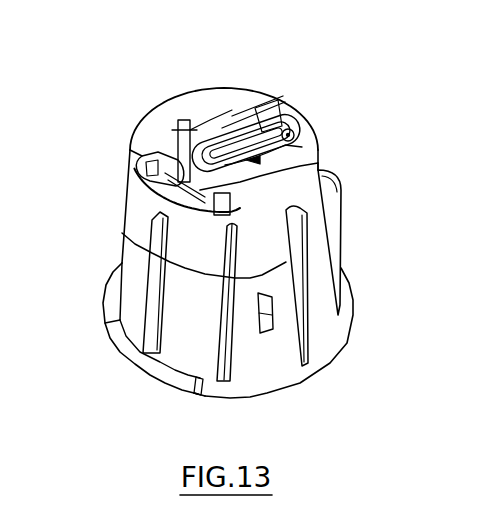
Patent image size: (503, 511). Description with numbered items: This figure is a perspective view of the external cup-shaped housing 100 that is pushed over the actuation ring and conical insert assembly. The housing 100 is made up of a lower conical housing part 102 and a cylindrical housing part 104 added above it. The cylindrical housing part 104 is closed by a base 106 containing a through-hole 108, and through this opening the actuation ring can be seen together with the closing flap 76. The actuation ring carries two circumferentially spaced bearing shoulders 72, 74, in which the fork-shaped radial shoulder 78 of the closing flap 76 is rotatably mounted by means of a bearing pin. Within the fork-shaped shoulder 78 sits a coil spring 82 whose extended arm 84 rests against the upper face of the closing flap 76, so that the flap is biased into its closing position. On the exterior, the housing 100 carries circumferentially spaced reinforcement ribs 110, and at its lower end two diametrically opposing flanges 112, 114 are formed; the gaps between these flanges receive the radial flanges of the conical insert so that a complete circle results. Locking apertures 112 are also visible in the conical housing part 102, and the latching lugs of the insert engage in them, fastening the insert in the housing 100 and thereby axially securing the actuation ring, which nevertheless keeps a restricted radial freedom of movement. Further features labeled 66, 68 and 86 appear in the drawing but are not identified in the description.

The cap 66 is at (157, 153).
The frame 68 is at (320, 163).
The bearing shoulder 72 is at (245, 102).
The bearing shoulder 74 is at (308, 117).
The closing flap 76 is at (305, 150).
The fork-shaped radial shoulder 78 is at (255, 112).
The coil spring 82 is at (275, 108).
The extended arm 84 is at (198, 122).
The lock member 86 is at (139, 180).
The cup-shaped housing 100 is at (355, 267).
The lower conical housing part 102 is at (323, 317).
The cylindrical housing part 104 is at (152, 200).
The base 106 is at (210, 100).
The through-hole 108 is at (182, 132).
The reinforcement ribs 110 is at (204, 401).
The flange / locking apertures 112 is at (260, 292).
The flange 114 is at (108, 290).